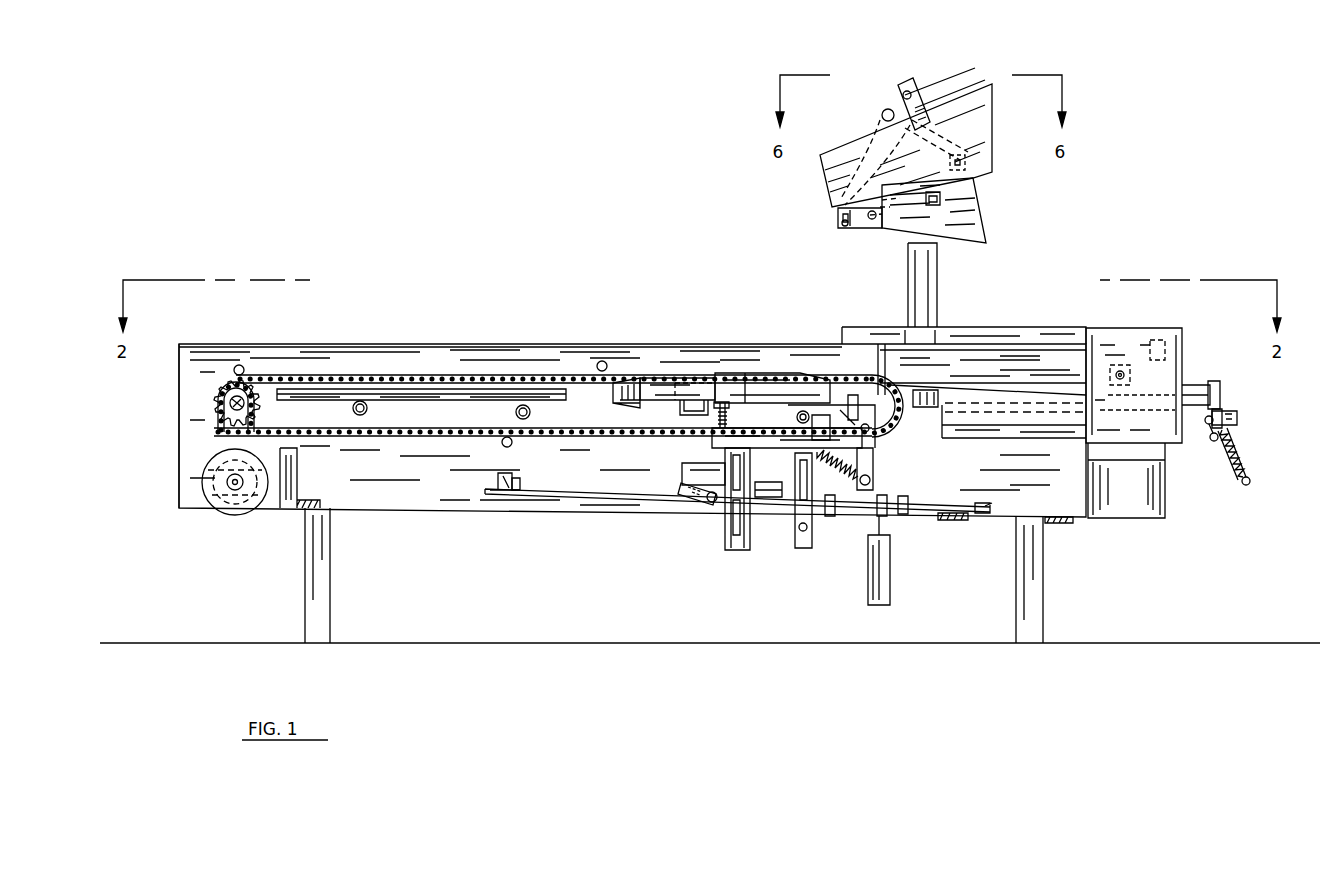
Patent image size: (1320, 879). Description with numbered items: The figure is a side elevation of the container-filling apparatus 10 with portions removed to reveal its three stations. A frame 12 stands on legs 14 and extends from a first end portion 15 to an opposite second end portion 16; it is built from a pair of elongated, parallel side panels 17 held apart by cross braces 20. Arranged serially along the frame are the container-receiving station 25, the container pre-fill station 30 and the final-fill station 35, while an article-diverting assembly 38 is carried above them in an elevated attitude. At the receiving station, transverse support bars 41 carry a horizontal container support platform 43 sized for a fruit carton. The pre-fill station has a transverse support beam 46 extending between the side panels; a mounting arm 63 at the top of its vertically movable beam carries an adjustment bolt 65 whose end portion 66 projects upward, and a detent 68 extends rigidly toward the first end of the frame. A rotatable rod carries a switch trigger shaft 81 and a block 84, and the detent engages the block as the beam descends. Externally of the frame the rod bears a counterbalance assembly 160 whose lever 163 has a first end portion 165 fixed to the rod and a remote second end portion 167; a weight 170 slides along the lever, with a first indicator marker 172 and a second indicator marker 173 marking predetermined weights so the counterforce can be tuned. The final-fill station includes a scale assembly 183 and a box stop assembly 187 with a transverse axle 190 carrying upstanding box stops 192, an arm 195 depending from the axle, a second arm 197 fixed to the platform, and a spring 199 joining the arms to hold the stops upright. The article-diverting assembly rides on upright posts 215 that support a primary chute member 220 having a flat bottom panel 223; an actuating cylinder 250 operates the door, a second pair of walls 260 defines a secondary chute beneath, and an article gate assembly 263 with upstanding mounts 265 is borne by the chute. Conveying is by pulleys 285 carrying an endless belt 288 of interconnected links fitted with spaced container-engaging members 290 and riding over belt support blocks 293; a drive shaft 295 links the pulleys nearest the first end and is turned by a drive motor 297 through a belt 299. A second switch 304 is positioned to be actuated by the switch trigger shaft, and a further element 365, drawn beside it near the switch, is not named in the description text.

The apparatus 10 is at (514, 248).
The frame 12 is at (332, 343).
The legs 14 is at (330, 582).
The first end portion 15 is at (190, 350).
The second end portion 16 is at (1135, 508).
The side panels 17 is at (223, 352).
The cross braces 20 is at (300, 503).
The container-receiving station 25 is at (393, 389).
The container pre-fill station 30 is at (777, 385).
The final-fill station 35 is at (1195, 405).
The article-diverting assembly 38 is at (940, 160).
The support bars 41 is at (368, 410).
The container support platform 43 is at (475, 395).
The transverse support beam 46 is at (758, 482).
The mounting arm 63 is at (712, 442).
The adjustment bolt 65 is at (664, 401).
The end portion 66 is at (722, 402).
The detent 68 is at (682, 468).
The switch trigger shaft 81 is at (608, 495).
The block 84 is at (705, 503).
The counterbalance assembly 160 is at (858, 504).
The lever 163 is at (918, 513).
The first end portion 165 is at (722, 505).
The second end portion 167 is at (986, 506).
The weight 170 is at (890, 581).
The first indicator marker 172 is at (835, 518).
The second indicator marker 173 is at (906, 500).
The scale assembly 183 is at (997, 378).
The box stop assembly 187 is at (1225, 405).
The axle 190 is at (1208, 428).
The box stops 192 is at (1218, 388).
The arm 195 is at (1236, 432).
The second arm 197 is at (1250, 468).
The spring 199 is at (1232, 470).
The upright posts 215 is at (925, 268).
The primary chute member 220 is at (845, 172).
The bottom panel 223 is at (985, 170).
The actuating cylinder 250 is at (878, 222).
The second pair of walls 260 is at (975, 212).
The article gate assembly 263 is at (855, 138).
The upstanding mounts 265 is at (917, 98).
The pulleys 285 is at (260, 410).
The endless belt 288 is at (310, 434).
The container-engaging members 290 is at (603, 361).
The belt support blocks 293 is at (693, 406).
The drive shaft 295 is at (212, 398).
The drive motor 297 is at (202, 477).
The belt 299 is at (220, 432).
The second switch 304 is at (520, 478).
The bracket 365 is at (503, 480).